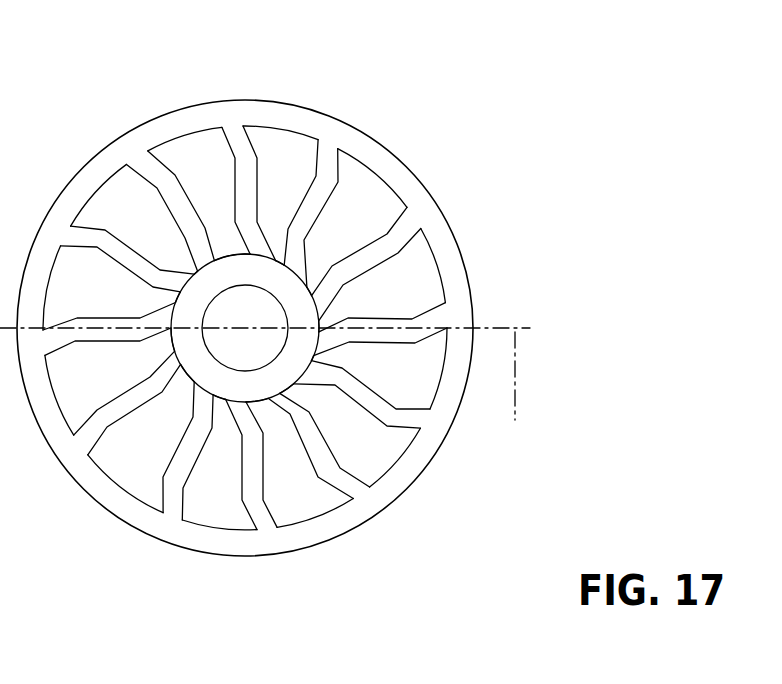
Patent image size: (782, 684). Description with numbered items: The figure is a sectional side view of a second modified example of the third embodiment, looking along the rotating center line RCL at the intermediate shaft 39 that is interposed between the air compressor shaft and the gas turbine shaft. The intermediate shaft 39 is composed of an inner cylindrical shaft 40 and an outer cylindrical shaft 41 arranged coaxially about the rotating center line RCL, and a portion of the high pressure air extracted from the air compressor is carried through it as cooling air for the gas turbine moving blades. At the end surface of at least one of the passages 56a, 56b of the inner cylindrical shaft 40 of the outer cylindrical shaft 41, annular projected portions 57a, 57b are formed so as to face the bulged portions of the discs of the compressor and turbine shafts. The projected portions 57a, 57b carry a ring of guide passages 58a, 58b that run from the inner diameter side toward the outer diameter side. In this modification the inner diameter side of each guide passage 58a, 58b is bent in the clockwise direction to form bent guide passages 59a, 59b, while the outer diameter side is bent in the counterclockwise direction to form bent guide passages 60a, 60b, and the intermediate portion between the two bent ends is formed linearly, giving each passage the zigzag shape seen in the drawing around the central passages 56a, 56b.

The intermediate shaft 39 is at (245, 293).
The inner cylindrical shaft 40 is at (245, 293).
The outer cylindrical shaft 41 is at (176, 111).
The passage 56a is at (255, 454).
The passage 56b is at (260, 359).
The annular projected portion 57a is at (471, 222).
The annular projected portion 57b is at (374, 224).
The guide passage 58a is at (385, 167).
The guide passage 58b is at (254, 248).
The bent guide passage 59a is at (437, 202).
The bent guide passage 59b is at (297, 247).
The bent guide passage 60a is at (385, 147).
The bent guide passage 60b is at (385, 147).
The rotating center line RCL is at (290, 391).